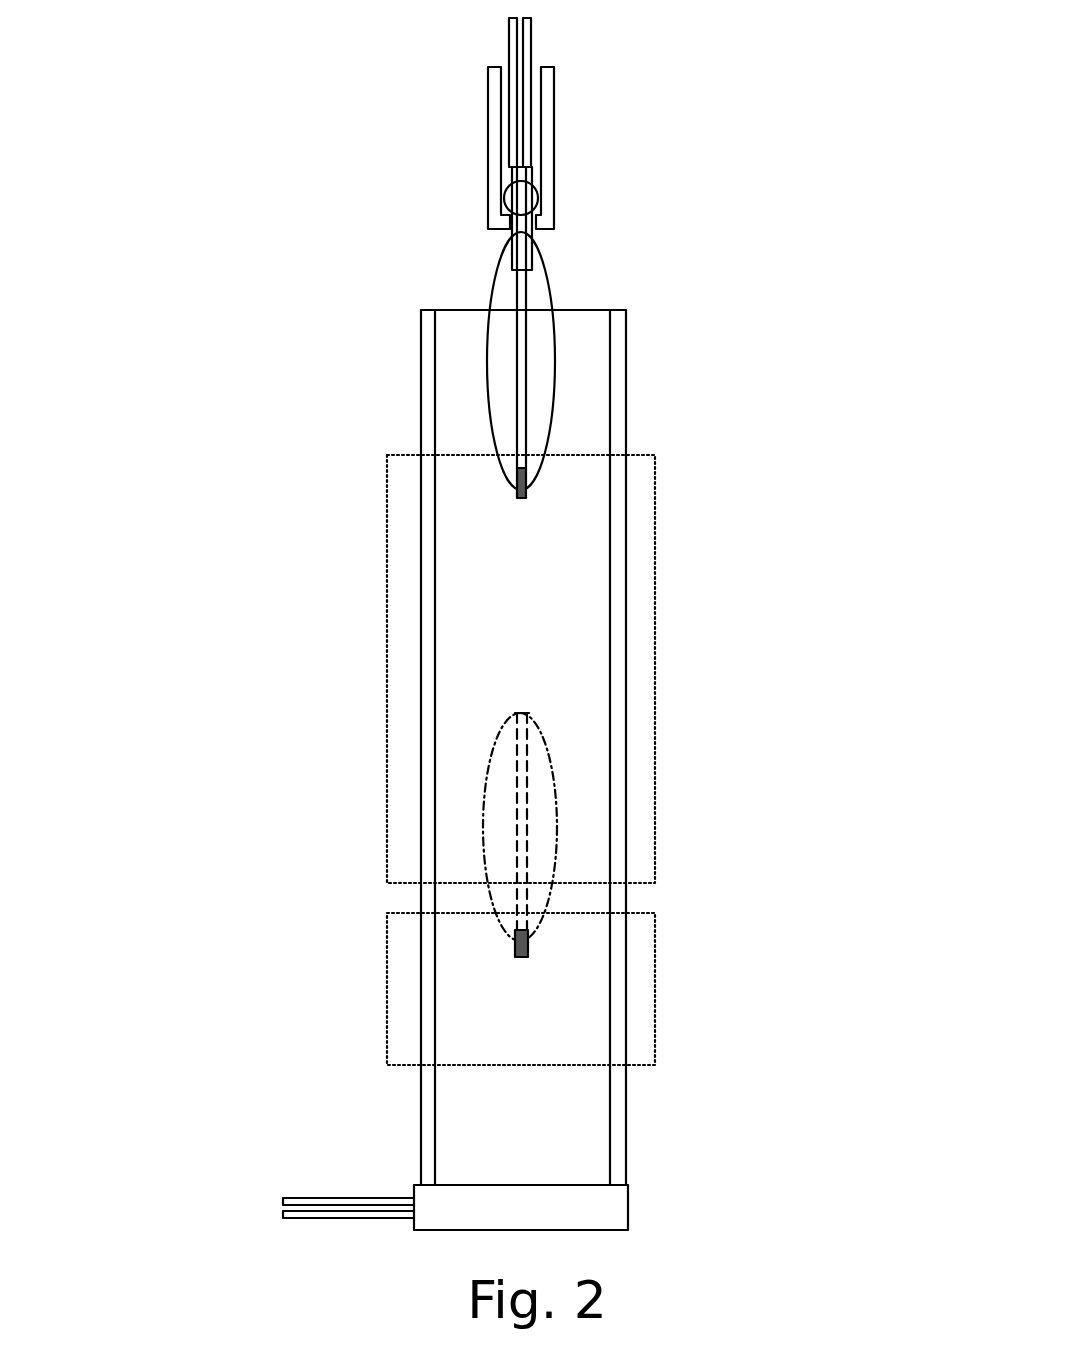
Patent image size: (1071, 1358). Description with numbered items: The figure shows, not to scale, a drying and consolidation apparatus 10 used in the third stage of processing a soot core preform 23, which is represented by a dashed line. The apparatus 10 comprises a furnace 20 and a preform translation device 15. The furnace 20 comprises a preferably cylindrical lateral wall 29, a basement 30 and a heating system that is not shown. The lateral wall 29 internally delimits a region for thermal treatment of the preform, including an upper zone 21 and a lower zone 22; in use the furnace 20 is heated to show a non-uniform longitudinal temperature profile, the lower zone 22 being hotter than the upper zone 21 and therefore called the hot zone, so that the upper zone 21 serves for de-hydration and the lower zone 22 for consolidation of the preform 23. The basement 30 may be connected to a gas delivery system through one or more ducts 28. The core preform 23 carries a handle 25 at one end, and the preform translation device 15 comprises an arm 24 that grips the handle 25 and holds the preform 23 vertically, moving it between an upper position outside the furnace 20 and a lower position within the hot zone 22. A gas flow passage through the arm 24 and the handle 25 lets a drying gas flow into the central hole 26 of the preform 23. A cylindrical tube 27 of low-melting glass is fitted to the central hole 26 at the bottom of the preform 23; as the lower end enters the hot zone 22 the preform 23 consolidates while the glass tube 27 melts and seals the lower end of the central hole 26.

The drying and consolidation apparatus 10 is at (281, 206).
The preform translation device 15 is at (432, 104).
The furnace 20 is at (362, 398).
The upper zone 21 is at (550, 668).
The lower zone 22 is at (550, 995).
The core preform 23 is at (493, 288).
The arm 24 is at (548, 118).
The handle 25 is at (536, 240).
The central hole 26 is at (525, 382).
The cylindrical tube 27 is at (518, 490).
The ducts 28 is at (275, 1203).
The lateral wall 29 is at (615, 513).
The basement 30 is at (578, 1203).